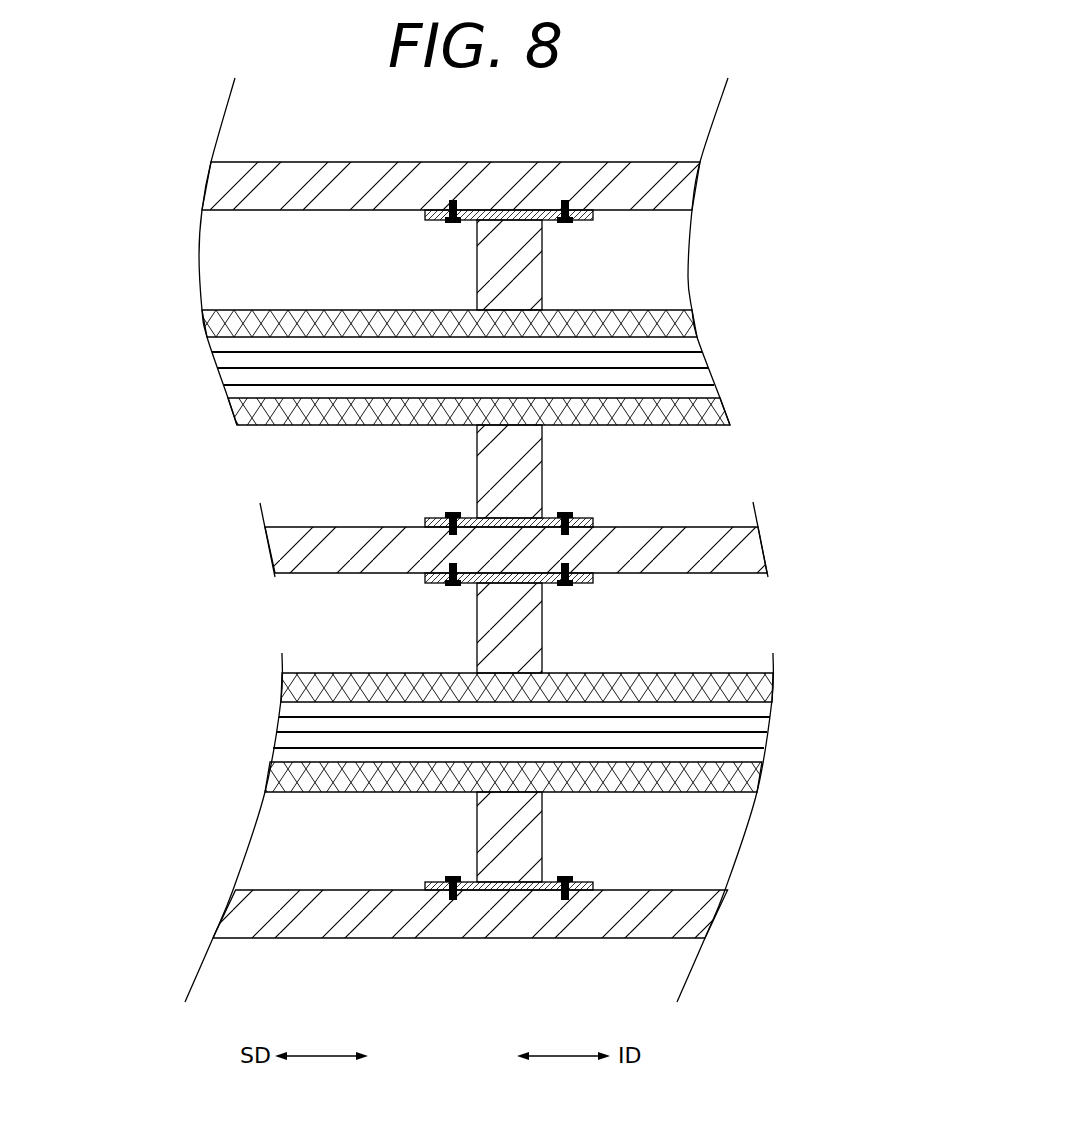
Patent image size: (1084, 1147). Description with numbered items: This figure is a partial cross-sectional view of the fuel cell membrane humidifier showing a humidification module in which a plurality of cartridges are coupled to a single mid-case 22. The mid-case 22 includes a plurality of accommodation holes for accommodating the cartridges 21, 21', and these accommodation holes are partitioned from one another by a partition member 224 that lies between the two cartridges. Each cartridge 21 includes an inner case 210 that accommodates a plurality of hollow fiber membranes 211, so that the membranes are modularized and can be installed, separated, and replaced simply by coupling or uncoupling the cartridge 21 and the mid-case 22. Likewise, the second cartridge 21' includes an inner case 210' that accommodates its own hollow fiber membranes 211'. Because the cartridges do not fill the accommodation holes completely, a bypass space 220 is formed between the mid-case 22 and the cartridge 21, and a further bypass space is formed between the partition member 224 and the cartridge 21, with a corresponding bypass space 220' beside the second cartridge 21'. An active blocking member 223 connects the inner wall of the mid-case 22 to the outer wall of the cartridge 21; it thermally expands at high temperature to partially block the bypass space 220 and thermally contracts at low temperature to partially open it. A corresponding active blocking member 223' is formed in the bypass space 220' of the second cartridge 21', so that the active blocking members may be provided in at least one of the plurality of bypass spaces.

The cartridge 21 is at (395, 366).
The inner case 210 is at (407, 322).
The hollow fiber membranes 211 is at (425, 380).
The mid-case 22 is at (638, 152).
The bypass space 220 is at (522, 193).
The active blocking member 223 is at (498, 211).
The partition member 224 is at (710, 548).
The cartridge 21' is at (444, 731).
The inner case 210' is at (477, 686).
The hollow fiber membranes 211' is at (477, 746).
The bypass space 220' is at (542, 931).
The active blocking member 223' is at (492, 898).